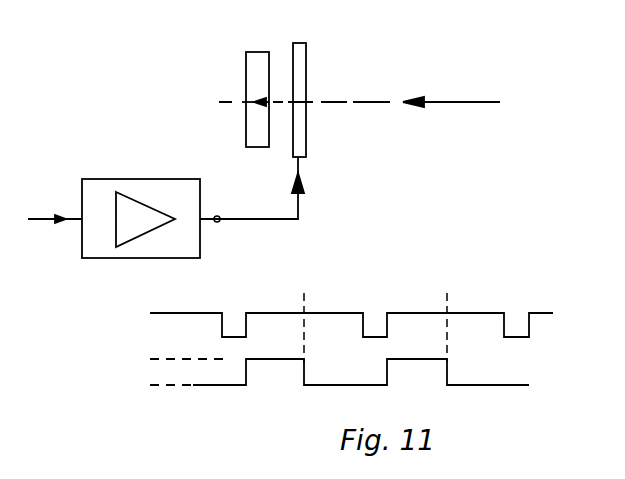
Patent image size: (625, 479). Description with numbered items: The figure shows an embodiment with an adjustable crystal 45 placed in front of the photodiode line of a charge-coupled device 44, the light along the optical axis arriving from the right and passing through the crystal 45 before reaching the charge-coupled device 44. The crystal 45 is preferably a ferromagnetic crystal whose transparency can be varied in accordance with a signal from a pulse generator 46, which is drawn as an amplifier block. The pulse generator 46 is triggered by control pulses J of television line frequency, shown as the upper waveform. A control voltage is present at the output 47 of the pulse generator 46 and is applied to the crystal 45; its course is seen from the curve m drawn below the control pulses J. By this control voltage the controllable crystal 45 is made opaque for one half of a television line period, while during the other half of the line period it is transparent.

The charge-coupled device 44 is at (252, 63).
The adjustable crystal 45 is at (302, 52).
The pulse generator 46 is at (155, 190).
The output 47 is at (220, 222).
The input signal J is at (203, 299).
The curve m is at (273, 360).